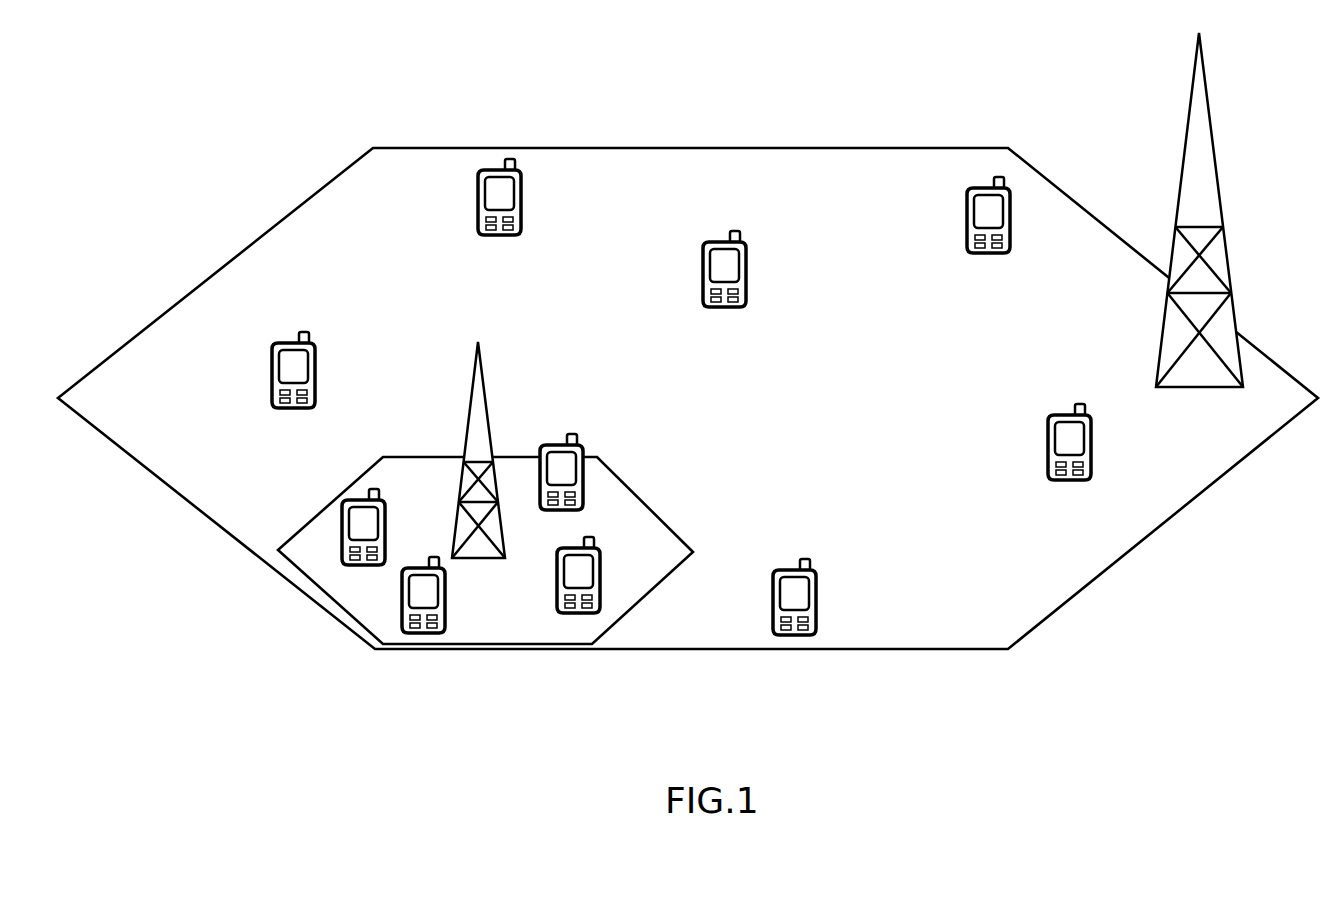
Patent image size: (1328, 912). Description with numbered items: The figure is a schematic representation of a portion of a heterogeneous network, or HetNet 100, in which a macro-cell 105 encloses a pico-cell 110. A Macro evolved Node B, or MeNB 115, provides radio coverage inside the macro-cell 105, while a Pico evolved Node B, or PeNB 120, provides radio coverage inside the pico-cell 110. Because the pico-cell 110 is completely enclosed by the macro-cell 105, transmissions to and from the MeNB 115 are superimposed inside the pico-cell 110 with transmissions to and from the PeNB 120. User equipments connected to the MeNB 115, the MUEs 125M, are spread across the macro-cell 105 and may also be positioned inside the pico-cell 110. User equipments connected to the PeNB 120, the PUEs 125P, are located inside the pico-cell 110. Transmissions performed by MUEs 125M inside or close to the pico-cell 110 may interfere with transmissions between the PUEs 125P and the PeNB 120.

The heterogeneous network 100 is at (216, 120).
The macro-cell 105 is at (190, 288).
The pico-cell 110 is at (330, 598).
The Macro evolved Node B 115 is at (1187, 145).
The Pico evolved Node B 120 is at (476, 373).
The macro user equipment 125M is at (478, 220).
The pico user equipment 125P is at (584, 476).